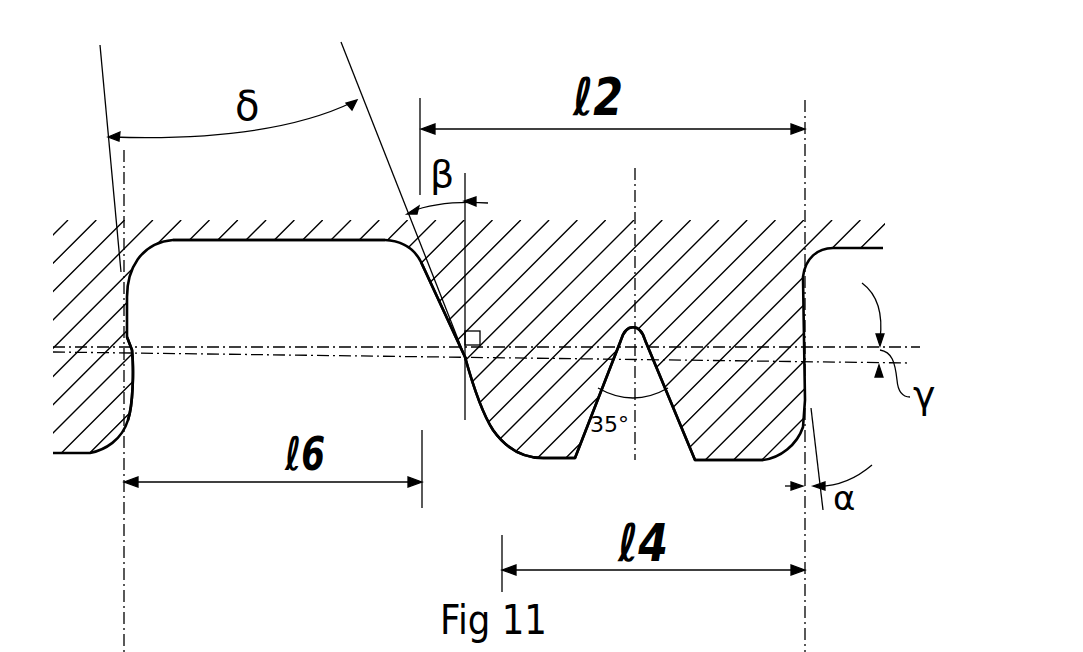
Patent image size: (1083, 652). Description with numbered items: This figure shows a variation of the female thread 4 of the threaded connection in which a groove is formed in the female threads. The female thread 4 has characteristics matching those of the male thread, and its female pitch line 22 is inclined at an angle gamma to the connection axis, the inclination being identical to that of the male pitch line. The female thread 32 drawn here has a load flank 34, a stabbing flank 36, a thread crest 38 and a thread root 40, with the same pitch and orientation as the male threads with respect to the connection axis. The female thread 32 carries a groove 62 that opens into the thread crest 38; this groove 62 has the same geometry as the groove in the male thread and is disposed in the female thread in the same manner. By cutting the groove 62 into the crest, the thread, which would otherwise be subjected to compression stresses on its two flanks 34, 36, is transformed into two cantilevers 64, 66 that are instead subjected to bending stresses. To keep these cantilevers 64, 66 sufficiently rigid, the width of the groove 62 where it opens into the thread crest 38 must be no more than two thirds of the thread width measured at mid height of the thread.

The female thread 4 is at (652, 90).
The female pitch line 22 is at (730, 460).
The female thread 32 is at (597, 280).
The load flank 34 is at (128, 337).
The stabbing flank 36 is at (465, 328).
The thread crest 38 is at (548, 460).
The thread root 40 is at (323, 240).
The groove 62 is at (643, 383).
The cantilever 64 is at (750, 393).
The cantilever 66 is at (518, 418).